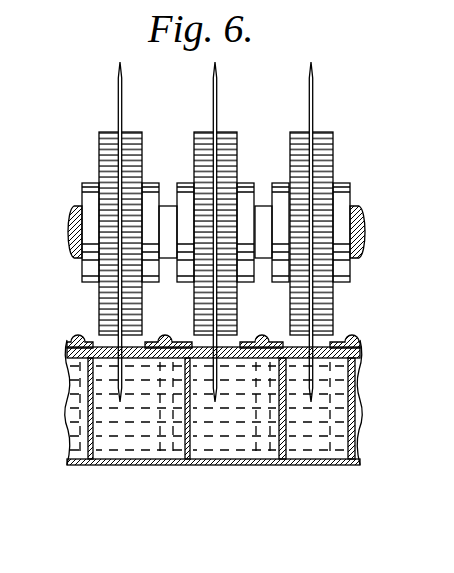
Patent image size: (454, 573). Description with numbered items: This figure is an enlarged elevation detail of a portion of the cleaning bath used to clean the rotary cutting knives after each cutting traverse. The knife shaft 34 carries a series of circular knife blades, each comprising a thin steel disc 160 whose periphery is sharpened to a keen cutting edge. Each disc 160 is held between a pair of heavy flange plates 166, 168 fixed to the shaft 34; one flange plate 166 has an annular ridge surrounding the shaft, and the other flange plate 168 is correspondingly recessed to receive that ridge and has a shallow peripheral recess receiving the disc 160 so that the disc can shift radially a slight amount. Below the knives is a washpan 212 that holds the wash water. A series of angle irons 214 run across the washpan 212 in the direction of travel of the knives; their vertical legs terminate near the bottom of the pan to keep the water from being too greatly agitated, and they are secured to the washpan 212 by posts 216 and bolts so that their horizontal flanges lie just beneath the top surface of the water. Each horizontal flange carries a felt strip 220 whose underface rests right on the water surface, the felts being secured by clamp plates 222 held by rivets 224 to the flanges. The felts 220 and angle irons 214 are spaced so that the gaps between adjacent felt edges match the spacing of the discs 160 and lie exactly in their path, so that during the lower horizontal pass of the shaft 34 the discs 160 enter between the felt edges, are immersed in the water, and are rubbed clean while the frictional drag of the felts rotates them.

The shaft 34 is at (363, 226).
The steel disc 160 is at (313, 90).
The flange plate 166 is at (289, 139).
The flange plate 168 is at (325, 157).
The washpan 212 is at (318, 466).
The angle iron 214 is at (276, 446).
The post 216 is at (160, 450).
The felt strip 220 is at (150, 345).
The clamp plate 222 is at (249, 345).
The rivet 224 is at (357, 340).